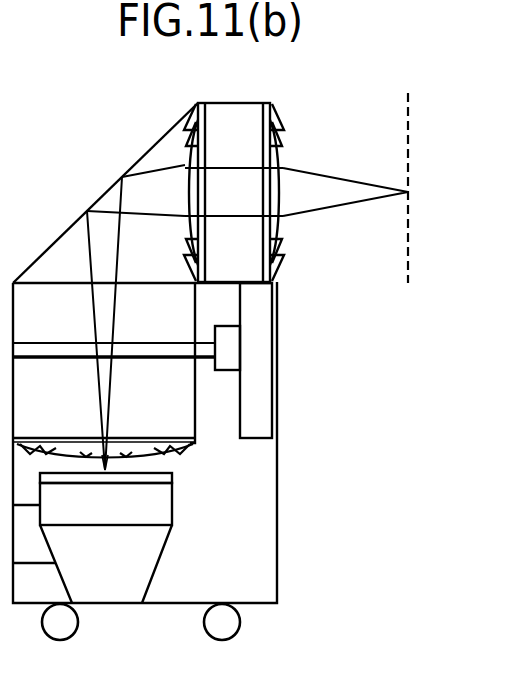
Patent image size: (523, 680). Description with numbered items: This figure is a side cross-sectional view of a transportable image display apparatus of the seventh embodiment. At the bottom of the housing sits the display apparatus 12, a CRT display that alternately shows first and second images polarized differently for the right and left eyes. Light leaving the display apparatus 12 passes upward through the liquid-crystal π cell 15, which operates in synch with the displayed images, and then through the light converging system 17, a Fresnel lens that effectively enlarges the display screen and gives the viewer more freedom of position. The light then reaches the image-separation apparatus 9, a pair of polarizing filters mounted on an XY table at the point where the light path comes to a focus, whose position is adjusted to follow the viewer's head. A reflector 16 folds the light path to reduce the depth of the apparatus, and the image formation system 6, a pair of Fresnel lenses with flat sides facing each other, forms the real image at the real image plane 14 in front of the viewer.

The image formation system 6 is at (236, 103).
The image-separation apparatus 9 is at (277, 365).
The display apparatus 12 is at (172, 513).
The real image plane 14 is at (410, 230).
The liquid-crystal π cell 15 is at (172, 478).
The reflector 16 is at (62, 238).
The light converging system 17 is at (192, 447).